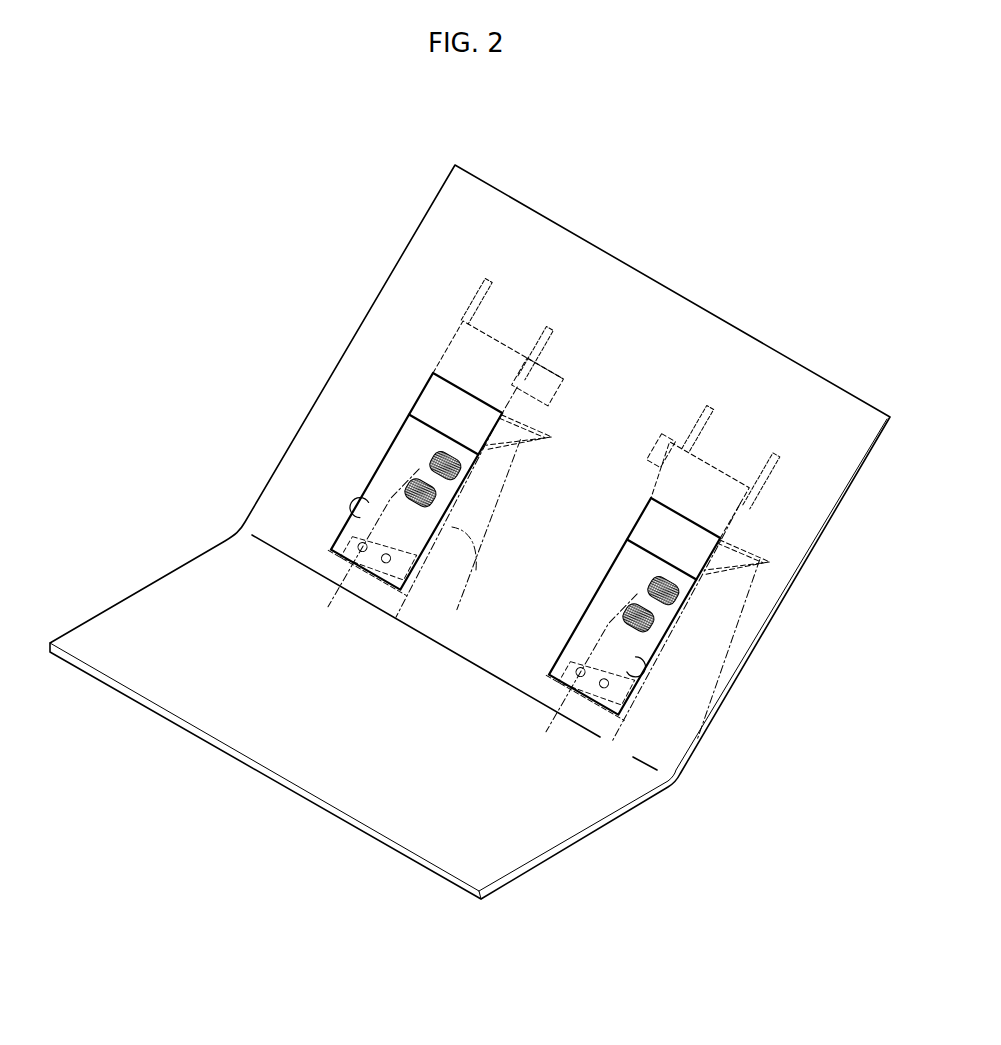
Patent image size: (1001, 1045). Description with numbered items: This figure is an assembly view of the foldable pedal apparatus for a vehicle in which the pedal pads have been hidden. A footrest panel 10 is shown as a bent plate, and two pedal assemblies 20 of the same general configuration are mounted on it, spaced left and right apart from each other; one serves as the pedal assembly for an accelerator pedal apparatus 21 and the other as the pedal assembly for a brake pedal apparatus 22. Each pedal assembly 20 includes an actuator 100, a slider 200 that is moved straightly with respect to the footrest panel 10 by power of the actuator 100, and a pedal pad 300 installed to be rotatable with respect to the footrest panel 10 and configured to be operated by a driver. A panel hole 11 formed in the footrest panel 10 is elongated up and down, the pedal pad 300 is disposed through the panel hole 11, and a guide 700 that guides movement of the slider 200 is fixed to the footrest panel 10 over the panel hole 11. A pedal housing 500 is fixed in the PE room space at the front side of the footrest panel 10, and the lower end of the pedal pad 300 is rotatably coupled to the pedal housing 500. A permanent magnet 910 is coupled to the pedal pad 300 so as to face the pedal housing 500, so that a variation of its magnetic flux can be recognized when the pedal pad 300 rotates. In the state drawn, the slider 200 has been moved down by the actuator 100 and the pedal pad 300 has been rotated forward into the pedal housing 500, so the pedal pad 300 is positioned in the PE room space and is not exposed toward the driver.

The footrest panel 10 is at (820, 473).
The panel hole 11 is at (368, 514).
The pedal assembly 20 is at (487, 579).
The accelerator pedal apparatus 21 is at (642, 710).
The brake pedal apparatus 22 is at (358, 477).
The actuator 100 is at (563, 378).
The slider 200 is at (437, 398).
The pedal pad 300 is at (398, 462).
The pedal housing 500 is at (520, 440).
The guide 700 is at (488, 290).
The permanent magnet 910 is at (387, 560).